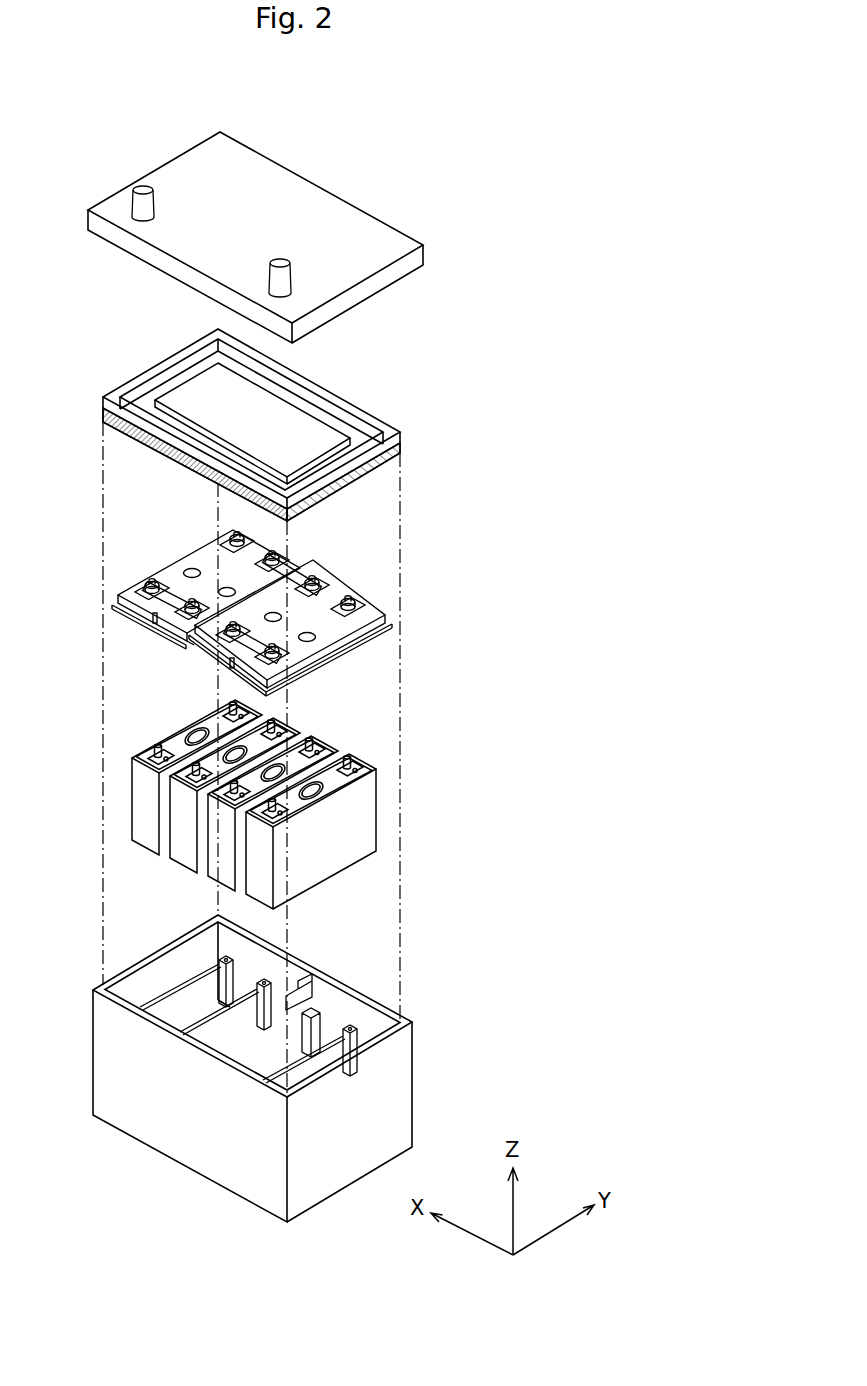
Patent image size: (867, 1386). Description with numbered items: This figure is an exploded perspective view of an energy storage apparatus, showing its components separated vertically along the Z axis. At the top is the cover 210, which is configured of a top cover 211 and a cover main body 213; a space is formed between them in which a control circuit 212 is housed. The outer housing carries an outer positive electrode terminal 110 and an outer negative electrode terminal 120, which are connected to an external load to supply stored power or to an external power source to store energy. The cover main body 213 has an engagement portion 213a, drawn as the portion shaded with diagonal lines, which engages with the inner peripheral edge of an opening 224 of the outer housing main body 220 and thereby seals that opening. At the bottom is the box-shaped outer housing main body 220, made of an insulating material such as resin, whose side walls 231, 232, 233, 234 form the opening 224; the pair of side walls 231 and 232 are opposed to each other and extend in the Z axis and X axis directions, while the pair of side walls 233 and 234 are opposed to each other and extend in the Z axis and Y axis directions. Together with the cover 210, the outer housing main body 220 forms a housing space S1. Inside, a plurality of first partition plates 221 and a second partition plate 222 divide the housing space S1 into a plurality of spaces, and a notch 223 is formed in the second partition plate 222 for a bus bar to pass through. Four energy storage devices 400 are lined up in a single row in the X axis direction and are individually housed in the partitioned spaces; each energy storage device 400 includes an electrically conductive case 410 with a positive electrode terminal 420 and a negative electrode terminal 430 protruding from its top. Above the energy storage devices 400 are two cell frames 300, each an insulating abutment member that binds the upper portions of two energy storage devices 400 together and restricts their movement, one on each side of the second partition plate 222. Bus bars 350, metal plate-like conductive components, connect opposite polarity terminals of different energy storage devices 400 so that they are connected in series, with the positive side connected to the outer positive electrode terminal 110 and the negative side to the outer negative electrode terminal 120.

The outer positive electrode terminal 110 is at (273, 260).
The outer negative electrode terminal 120 is at (138, 184).
The cover 210 is at (482, 210).
The top cover 211 is at (405, 240).
The control circuit 212 is at (310, 427).
The cover main body 213 is at (395, 435).
The engagement portion 213a is at (377, 470).
The outer housing main body 220 is at (246, 1068).
The first partition plate 221 is at (167, 1007).
The second partition plate 222 is at (217, 1032).
The notch 223 is at (290, 990).
The opening 224 is at (383, 1005).
The side wall 231 is at (337, 1003).
The side wall 232 is at (160, 1122).
The side wall 233 is at (350, 1127).
The side wall 234 is at (157, 967).
The cell frame 300 is at (197, 553).
The bus bar 350 is at (302, 575).
The energy storage device 400 is at (221, 809).
The case 410 is at (257, 809).
The positive electrode terminal 420 is at (348, 760).
The negative electrode terminal 430 is at (288, 818).
The housing space S1 is at (133, 991).